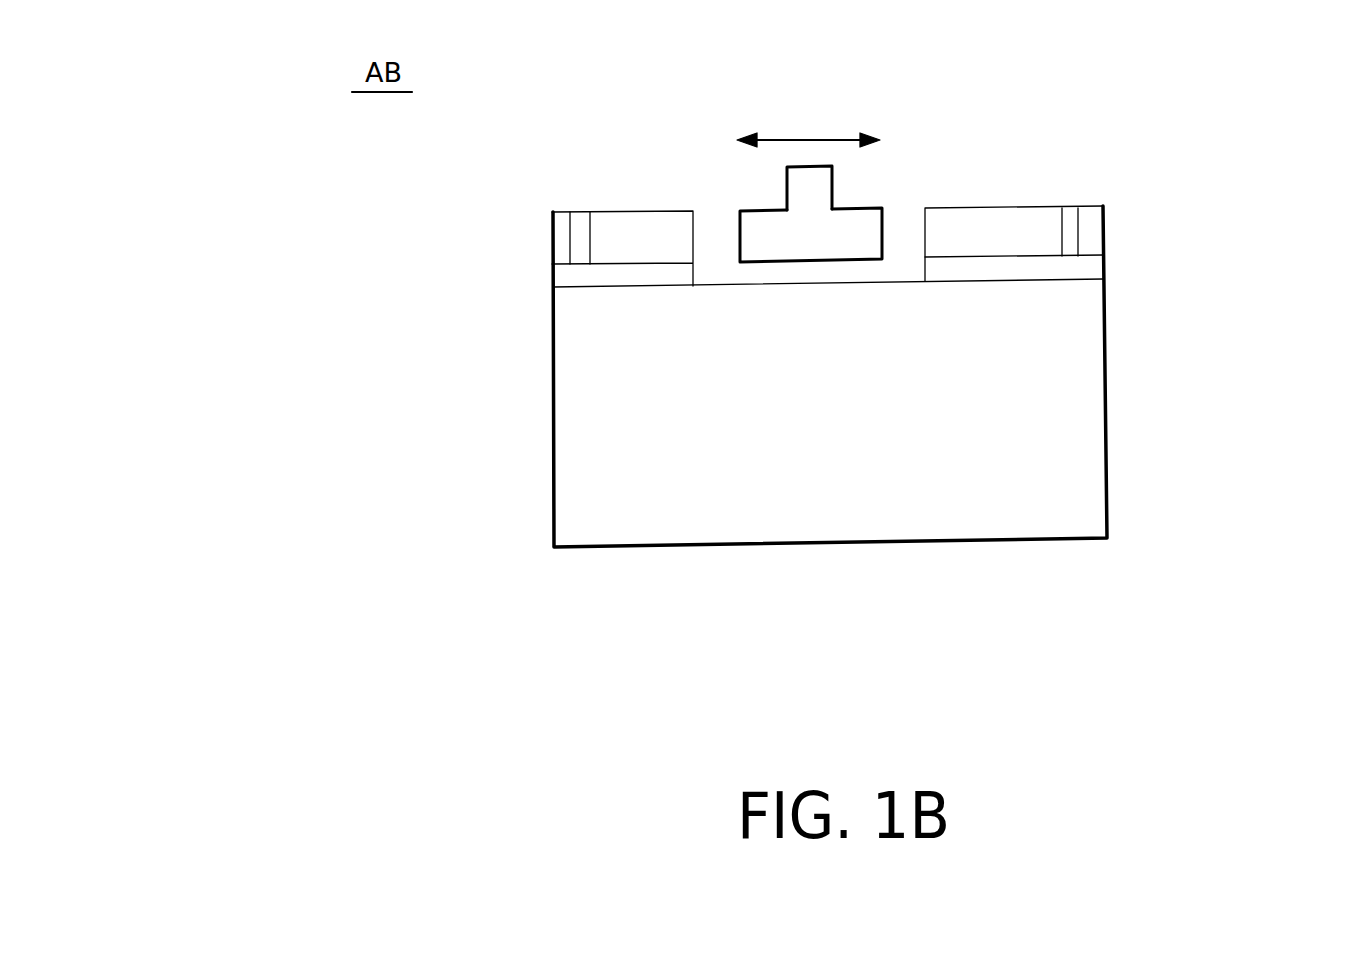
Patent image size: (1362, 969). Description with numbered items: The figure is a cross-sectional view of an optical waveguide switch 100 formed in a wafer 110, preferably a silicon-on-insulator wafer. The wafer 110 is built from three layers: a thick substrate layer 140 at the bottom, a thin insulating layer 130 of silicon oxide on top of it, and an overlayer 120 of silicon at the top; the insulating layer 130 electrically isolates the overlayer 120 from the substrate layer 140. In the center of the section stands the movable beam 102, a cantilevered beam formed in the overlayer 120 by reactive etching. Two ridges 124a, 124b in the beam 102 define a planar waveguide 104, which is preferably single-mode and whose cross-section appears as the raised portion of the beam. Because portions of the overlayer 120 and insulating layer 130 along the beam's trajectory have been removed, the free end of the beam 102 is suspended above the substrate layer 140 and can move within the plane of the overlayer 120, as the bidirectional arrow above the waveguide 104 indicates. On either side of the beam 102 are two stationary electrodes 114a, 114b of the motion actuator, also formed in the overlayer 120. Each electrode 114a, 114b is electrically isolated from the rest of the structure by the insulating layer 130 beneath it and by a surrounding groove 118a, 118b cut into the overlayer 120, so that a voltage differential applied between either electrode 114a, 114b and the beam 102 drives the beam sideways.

The optical waveguide switch 100 is at (242, 610).
The movable beam 102 is at (833, 227).
The planar waveguide 104 is at (800, 195).
The wafer 110 is at (940, 362).
The electrode 114a is at (618, 226).
The electrode 114b is at (1010, 207).
The groove 118a is at (572, 200).
The groove 118b is at (1074, 182).
The overlayer 120 is at (1072, 237).
The ridge 124a is at (787, 177).
The ridge 124b is at (835, 173).
The insulating layer 130 is at (1095, 268).
The substrate layer 140 is at (1077, 440).